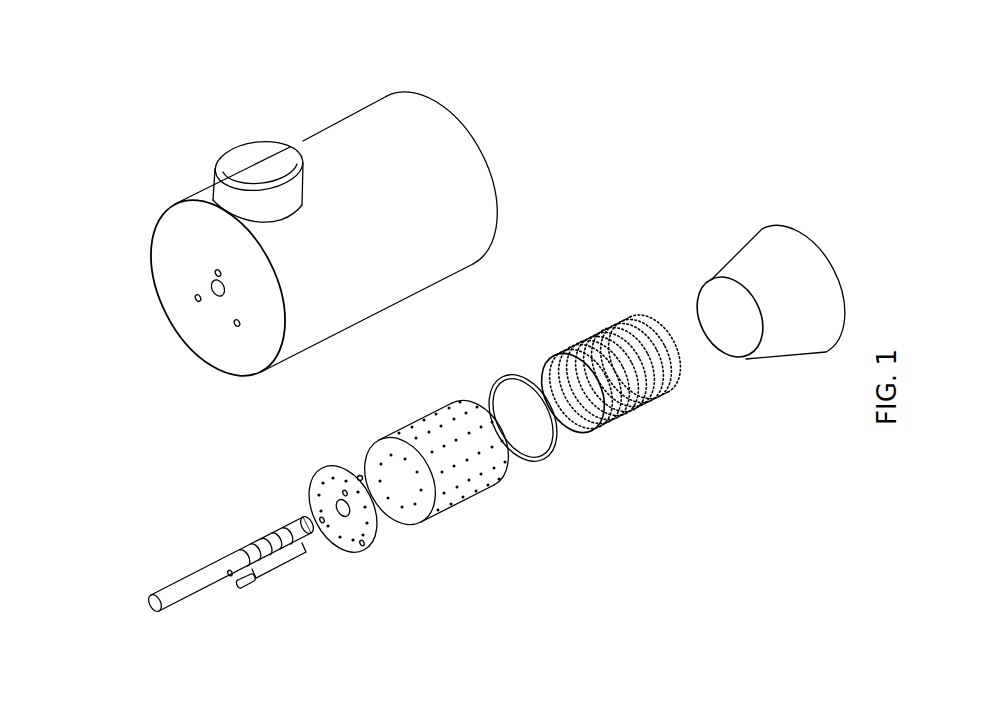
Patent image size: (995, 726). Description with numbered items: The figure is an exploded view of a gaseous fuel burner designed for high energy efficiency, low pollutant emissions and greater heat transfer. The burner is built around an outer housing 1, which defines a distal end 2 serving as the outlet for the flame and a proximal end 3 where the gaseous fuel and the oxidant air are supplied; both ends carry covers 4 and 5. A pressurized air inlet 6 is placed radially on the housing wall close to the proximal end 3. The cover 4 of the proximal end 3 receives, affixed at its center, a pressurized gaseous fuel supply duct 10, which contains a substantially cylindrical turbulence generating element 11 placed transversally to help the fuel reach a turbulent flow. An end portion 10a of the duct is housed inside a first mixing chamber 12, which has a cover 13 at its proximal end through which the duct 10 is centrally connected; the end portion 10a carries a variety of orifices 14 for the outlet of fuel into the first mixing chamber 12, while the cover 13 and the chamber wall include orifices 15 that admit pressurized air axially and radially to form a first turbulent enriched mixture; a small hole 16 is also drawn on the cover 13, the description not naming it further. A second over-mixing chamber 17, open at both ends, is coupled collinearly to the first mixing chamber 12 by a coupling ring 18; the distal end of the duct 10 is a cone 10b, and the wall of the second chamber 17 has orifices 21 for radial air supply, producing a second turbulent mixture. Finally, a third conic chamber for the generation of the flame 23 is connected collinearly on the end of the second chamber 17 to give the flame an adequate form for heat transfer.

The outer housing 1 is at (348, 105).
The distal end 2 is at (450, 103).
The proximal end 3 is at (152, 285).
The cover 4 is at (222, 347).
The cover 5 is at (493, 180).
The pressurized air inlet 6 is at (245, 167).
The gaseous fuel supply duct 10 is at (173, 592).
The end portion 10a is at (285, 573).
The cone 10b is at (307, 535).
The turbulence generating element 11 is at (237, 590).
The first mixing chamber 12 is at (417, 500).
The cover 13 is at (323, 470).
The orifices 14 is at (287, 536).
The orifices 15 is at (323, 505).
The hole 16 is at (358, 476).
The second over-mixing chamber 17 is at (587, 393).
The coupling ring 18 is at (510, 373).
The orifices 21 is at (620, 320).
The third conic chamber for the generation of the flame 23 is at (760, 265).